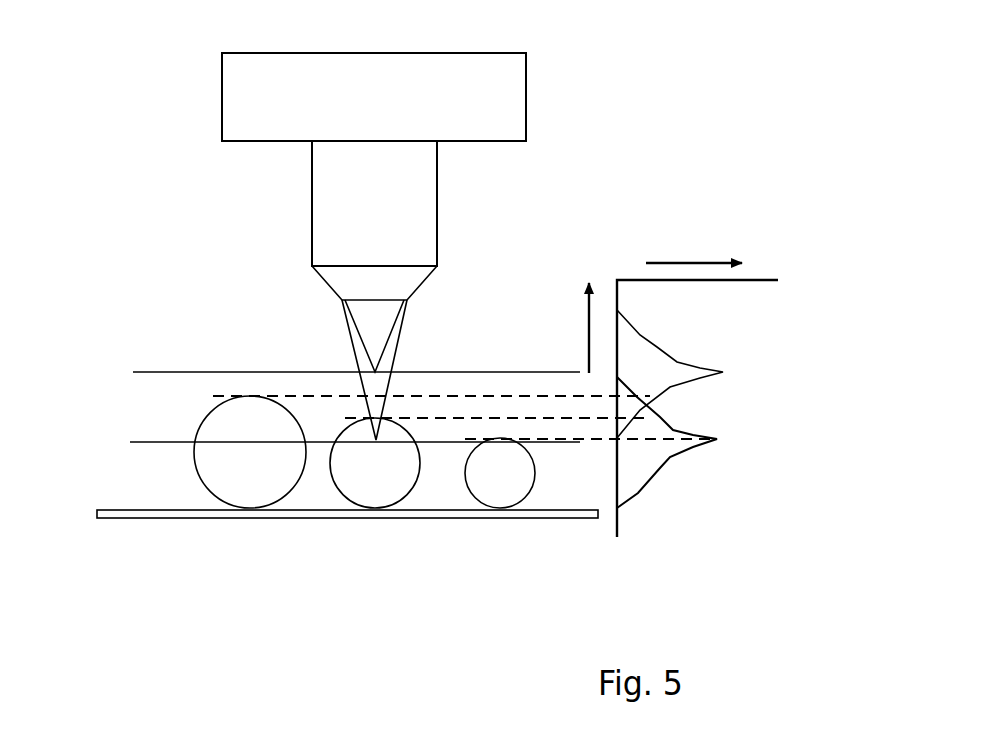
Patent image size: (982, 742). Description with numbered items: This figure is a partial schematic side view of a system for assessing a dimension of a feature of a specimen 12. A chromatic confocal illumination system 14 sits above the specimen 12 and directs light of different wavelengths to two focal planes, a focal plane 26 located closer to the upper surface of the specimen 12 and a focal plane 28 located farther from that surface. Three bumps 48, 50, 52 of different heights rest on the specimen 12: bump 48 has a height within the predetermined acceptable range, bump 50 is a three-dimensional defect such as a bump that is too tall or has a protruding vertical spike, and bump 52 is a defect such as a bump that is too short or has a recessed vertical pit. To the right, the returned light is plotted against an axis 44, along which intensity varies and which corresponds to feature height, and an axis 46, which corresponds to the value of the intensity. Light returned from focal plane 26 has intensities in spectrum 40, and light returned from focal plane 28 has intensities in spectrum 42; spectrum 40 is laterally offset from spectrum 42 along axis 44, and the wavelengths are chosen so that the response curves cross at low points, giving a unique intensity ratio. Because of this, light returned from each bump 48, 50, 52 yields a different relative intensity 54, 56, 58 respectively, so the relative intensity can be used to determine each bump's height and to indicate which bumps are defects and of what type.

The specimen 12 is at (150, 520).
The illumination system 14 is at (543, 105).
The focal plane 26 is at (148, 441).
The focal plane 28 is at (187, 370).
The spectrum 40 is at (662, 468).
The spectrum 42 is at (660, 347).
The axis 44 is at (574, 328).
The axis 46 is at (694, 251).
The bump 48 is at (375, 497).
The bump 50 is at (248, 493).
The bump 52 is at (503, 497).
The relative intensity 54 is at (665, 418).
The relative intensity 56 is at (665, 396).
The relative intensity 58 is at (718, 440).